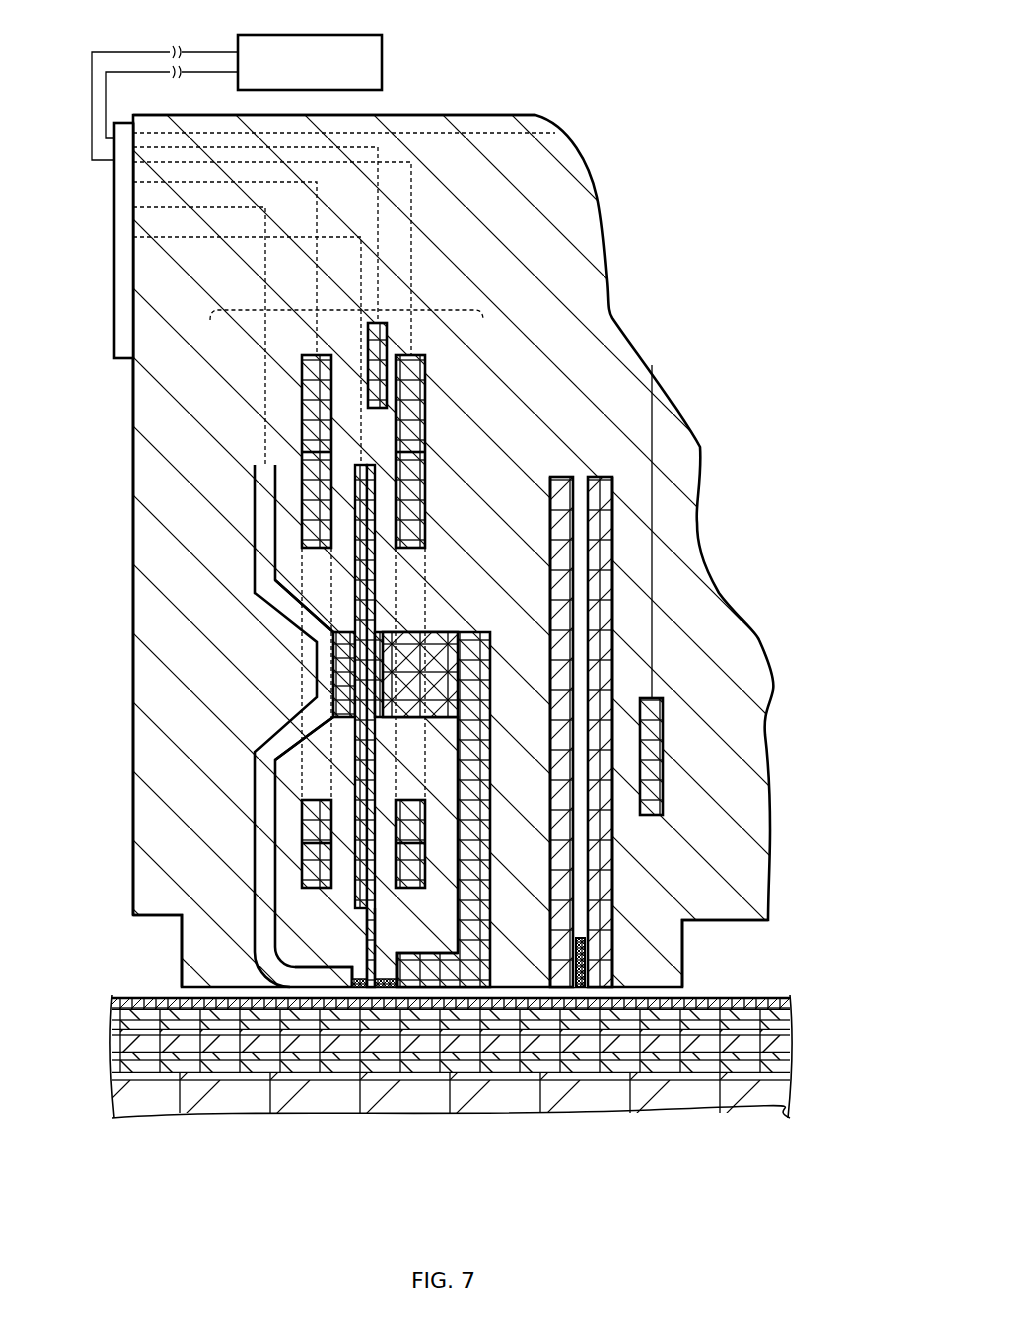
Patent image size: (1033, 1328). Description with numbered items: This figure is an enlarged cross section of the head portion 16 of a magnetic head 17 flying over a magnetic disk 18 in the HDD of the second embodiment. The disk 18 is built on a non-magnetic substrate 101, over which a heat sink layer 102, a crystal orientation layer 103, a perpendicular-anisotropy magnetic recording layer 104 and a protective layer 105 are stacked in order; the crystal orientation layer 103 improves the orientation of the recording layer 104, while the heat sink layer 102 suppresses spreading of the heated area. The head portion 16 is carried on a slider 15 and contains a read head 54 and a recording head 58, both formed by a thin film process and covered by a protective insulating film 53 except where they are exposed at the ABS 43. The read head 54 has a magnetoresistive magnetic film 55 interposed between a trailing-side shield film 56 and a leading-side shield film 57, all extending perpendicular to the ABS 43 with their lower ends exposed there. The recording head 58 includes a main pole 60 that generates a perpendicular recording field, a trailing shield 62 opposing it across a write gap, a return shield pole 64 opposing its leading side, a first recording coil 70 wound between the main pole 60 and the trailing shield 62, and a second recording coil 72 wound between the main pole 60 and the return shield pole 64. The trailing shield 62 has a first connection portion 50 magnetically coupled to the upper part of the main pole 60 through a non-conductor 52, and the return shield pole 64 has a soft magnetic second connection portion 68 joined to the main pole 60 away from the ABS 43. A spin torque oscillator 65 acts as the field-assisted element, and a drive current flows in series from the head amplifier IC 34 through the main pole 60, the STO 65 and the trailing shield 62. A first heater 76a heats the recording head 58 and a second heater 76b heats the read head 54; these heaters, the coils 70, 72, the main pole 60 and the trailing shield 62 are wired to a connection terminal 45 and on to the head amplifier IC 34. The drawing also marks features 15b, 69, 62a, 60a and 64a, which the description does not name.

The head amplifier IC 34 is at (383, 65).
The magnetic head 17 is at (668, 252).
The connection terminal 45 is at (112, 289).
The recording head 58 is at (348, 310).
The first heater 76a is at (387, 343).
The slider 15 is at (128, 420).
The protective insulating film 53 is at (150, 468).
The first recording coil 70 is at (302, 440).
The second recording coil 72 is at (425, 450).
The read head 54 is at (620, 472).
The head portion 16 is at (688, 452).
The top wall 15b is at (130, 557).
The second connection portion 68 is at (430, 625).
The non-conductor 52 is at (333, 655).
The core member 69 is at (420, 650).
The first connection portion 50 is at (323, 687).
The return shield pole 64 is at (490, 690).
The shield film 57 is at (565, 635).
The shield film 56 is at (605, 672).
The second heater 76b is at (663, 757).
The trailing shield 62 is at (240, 770).
The main pole 60 is at (373, 887).
The magnetic film 55 is at (585, 955).
The ABS 43 is at (758, 922).
The protective layer 105 is at (112, 1005).
The magnetic recording layer 104 is at (112, 1020).
The crystal orientation layer 103 is at (112, 1043).
The heat sink layer 102 is at (112, 1063).
The substrate 101 is at (112, 1093).
The magnetic disk 18 is at (415, 1097).
The outer conductor end 62a is at (302, 990).
The spin torque oscillator 65 is at (357, 990).
The center conductor end 60a is at (375, 990).
The support member end 64a is at (457, 990).